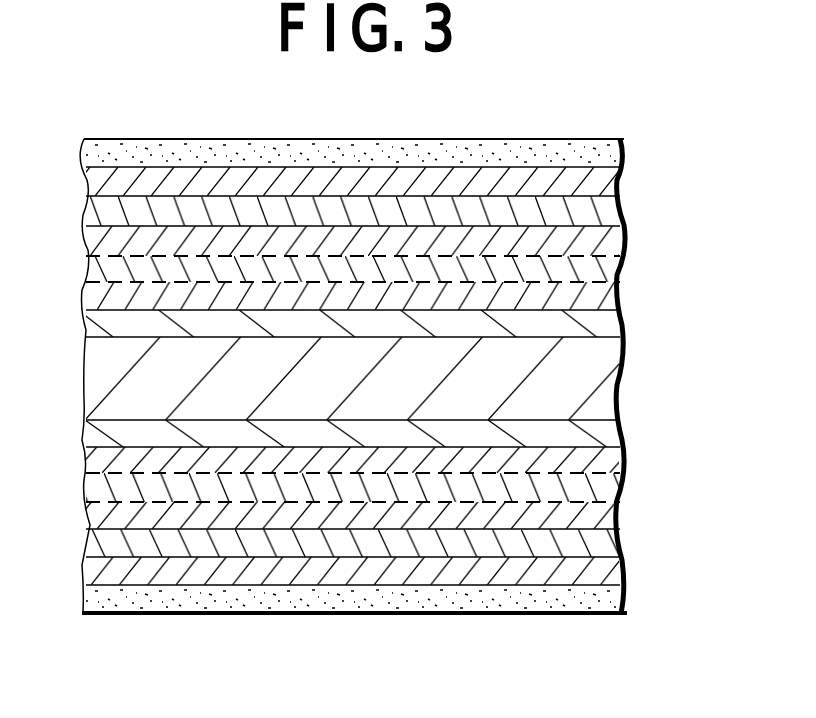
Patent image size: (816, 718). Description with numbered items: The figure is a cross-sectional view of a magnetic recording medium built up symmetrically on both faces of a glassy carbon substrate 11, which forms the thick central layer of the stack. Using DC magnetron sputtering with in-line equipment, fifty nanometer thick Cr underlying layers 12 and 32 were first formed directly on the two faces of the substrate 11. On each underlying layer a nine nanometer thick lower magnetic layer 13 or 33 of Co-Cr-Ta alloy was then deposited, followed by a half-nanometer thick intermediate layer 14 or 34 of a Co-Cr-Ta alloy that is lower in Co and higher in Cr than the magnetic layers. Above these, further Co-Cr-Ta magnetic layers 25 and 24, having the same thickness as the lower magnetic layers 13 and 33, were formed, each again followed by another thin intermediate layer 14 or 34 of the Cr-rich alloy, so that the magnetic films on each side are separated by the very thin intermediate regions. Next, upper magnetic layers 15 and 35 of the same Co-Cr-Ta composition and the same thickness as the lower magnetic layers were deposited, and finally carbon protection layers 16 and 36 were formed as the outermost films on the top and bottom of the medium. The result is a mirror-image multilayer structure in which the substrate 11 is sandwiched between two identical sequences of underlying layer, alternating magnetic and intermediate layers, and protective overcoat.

The substrate 11 is at (592, 392).
The underlying layer 12 is at (597, 328).
The lower magnetic layer 13 is at (597, 300).
The intermediate layer 14 is at (205, 215).
The upper magnetic layer 15 is at (372, 178).
The protection layer 16 is at (533, 160).
The magnetic layer 24 is at (595, 518).
The magnetic layer 25 is at (595, 244).
The underlying layer 32 is at (608, 435).
The lower magnetic layer 33 is at (597, 463).
The intermediate layer 34 is at (603, 490).
The upper magnetic layer 35 is at (330, 567).
The protection layer 36 is at (532, 592).